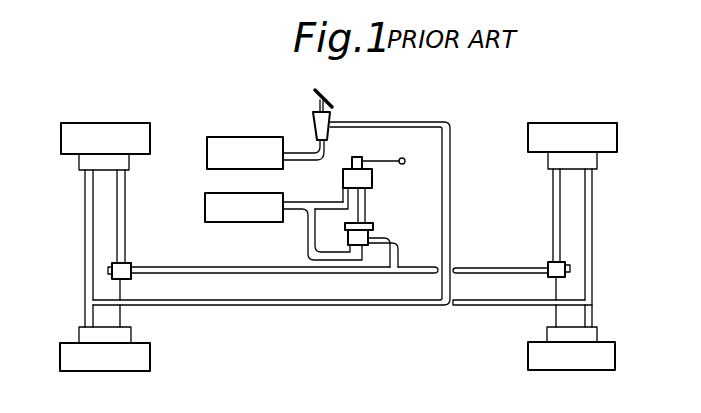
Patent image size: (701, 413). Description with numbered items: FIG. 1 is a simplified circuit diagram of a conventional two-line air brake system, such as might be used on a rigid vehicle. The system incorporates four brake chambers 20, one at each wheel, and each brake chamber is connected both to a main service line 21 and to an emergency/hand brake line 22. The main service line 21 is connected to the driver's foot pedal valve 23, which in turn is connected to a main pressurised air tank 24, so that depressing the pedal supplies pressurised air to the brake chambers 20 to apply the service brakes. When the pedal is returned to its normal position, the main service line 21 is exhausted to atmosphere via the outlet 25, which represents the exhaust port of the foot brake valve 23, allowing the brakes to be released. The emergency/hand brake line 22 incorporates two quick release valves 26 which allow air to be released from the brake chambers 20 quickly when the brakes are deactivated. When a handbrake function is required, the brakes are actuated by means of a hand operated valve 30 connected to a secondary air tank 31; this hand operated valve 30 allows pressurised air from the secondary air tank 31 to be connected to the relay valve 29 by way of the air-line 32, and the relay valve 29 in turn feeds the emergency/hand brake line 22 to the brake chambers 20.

The brake chambers 20 is at (153, 103).
The main service line 21 is at (84, 231).
The emergency/hand brake line 22 is at (126, 292).
The foot pedal valve 23 is at (333, 93).
The main pressurised air tank 24 is at (262, 112).
The outlet 25 is at (338, 137).
The quick release valves 26 is at (550, 262).
The relay valve 29 is at (375, 228).
The hand operated valve 30 is at (388, 178).
The secondary air tank 31 is at (213, 207).
The air-line 32 is at (368, 206).